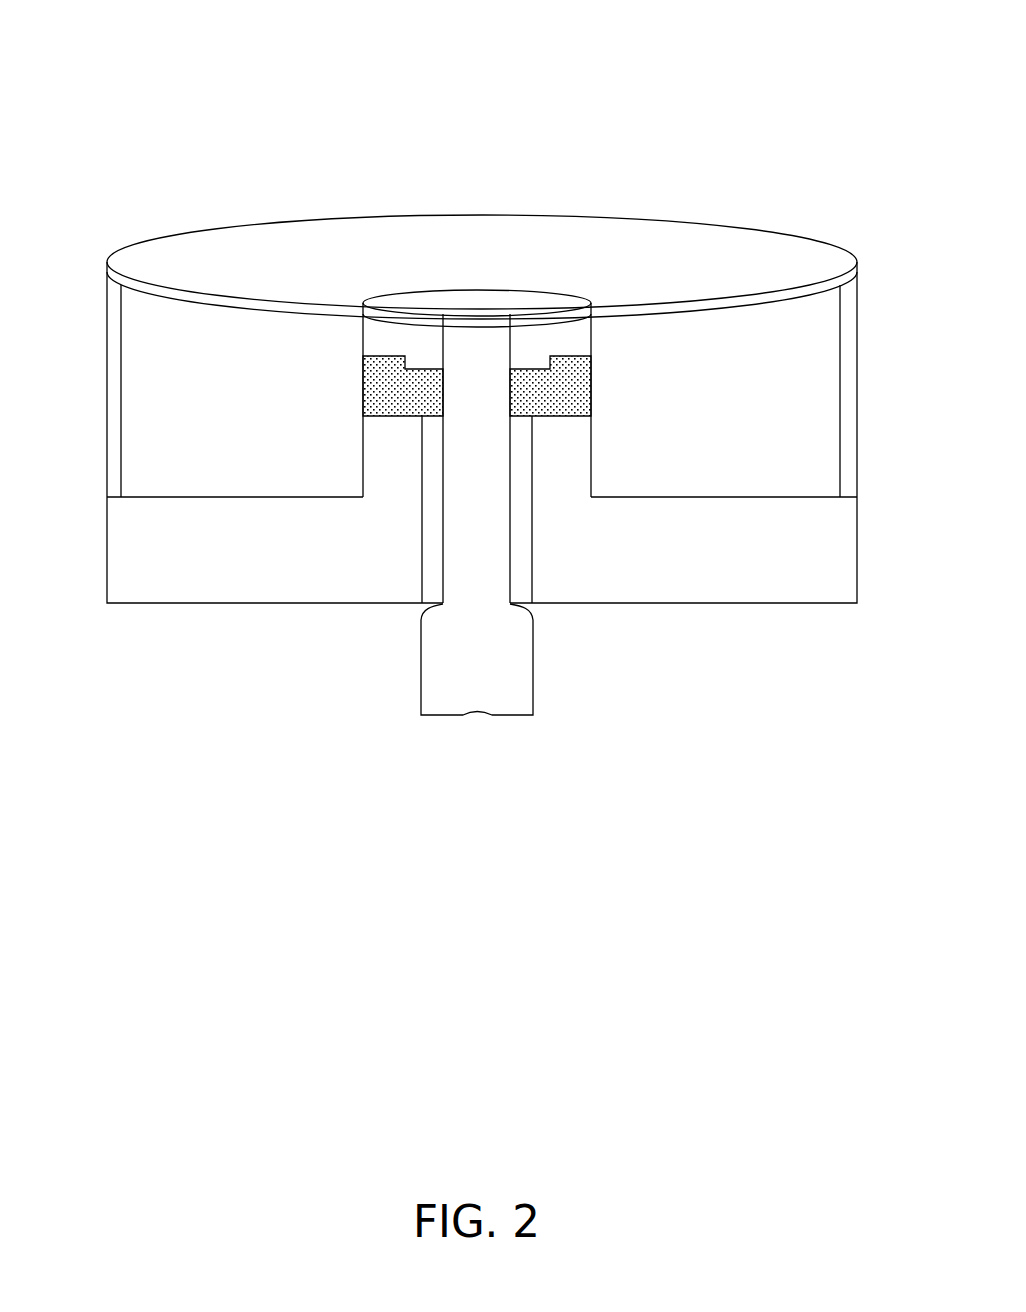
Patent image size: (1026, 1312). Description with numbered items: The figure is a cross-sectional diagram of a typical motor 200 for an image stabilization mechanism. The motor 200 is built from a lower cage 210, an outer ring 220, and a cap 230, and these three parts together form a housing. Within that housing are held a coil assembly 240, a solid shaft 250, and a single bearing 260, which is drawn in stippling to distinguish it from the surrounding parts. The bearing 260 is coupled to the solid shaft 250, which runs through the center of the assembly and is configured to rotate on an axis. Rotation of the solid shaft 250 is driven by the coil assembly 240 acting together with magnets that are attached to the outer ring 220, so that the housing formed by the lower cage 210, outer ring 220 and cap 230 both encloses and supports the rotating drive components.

The motor 200 is at (198, 92).
The lower cage 210 is at (118, 588).
The outer ring 220 is at (115, 400).
The cap 230 is at (630, 229).
The coil assembly 240 is at (797, 421).
The solid shaft 250 is at (465, 576).
The single bearing 260 is at (577, 392).